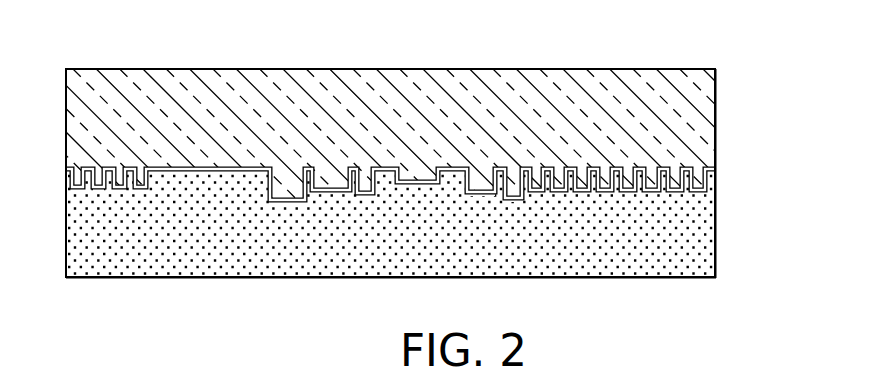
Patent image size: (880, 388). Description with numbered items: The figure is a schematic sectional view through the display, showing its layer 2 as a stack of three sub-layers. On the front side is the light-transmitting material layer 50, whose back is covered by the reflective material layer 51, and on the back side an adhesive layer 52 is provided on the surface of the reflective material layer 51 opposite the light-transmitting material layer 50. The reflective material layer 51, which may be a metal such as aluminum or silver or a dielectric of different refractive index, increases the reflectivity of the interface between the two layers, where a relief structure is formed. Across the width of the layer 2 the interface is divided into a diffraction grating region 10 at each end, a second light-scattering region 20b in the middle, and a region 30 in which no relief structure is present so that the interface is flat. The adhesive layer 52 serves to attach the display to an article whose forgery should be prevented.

The layer 2 is at (782, 72).
The diffraction grating region 10 is at (66, 64).
The region 30 is at (280, 64).
The second light-scattering region 20b is at (283, 64).
The light-transmitting material layer 50 is at (710, 87).
The reflective material layer 51 is at (688, 170).
The adhesive layer 52 is at (710, 242).